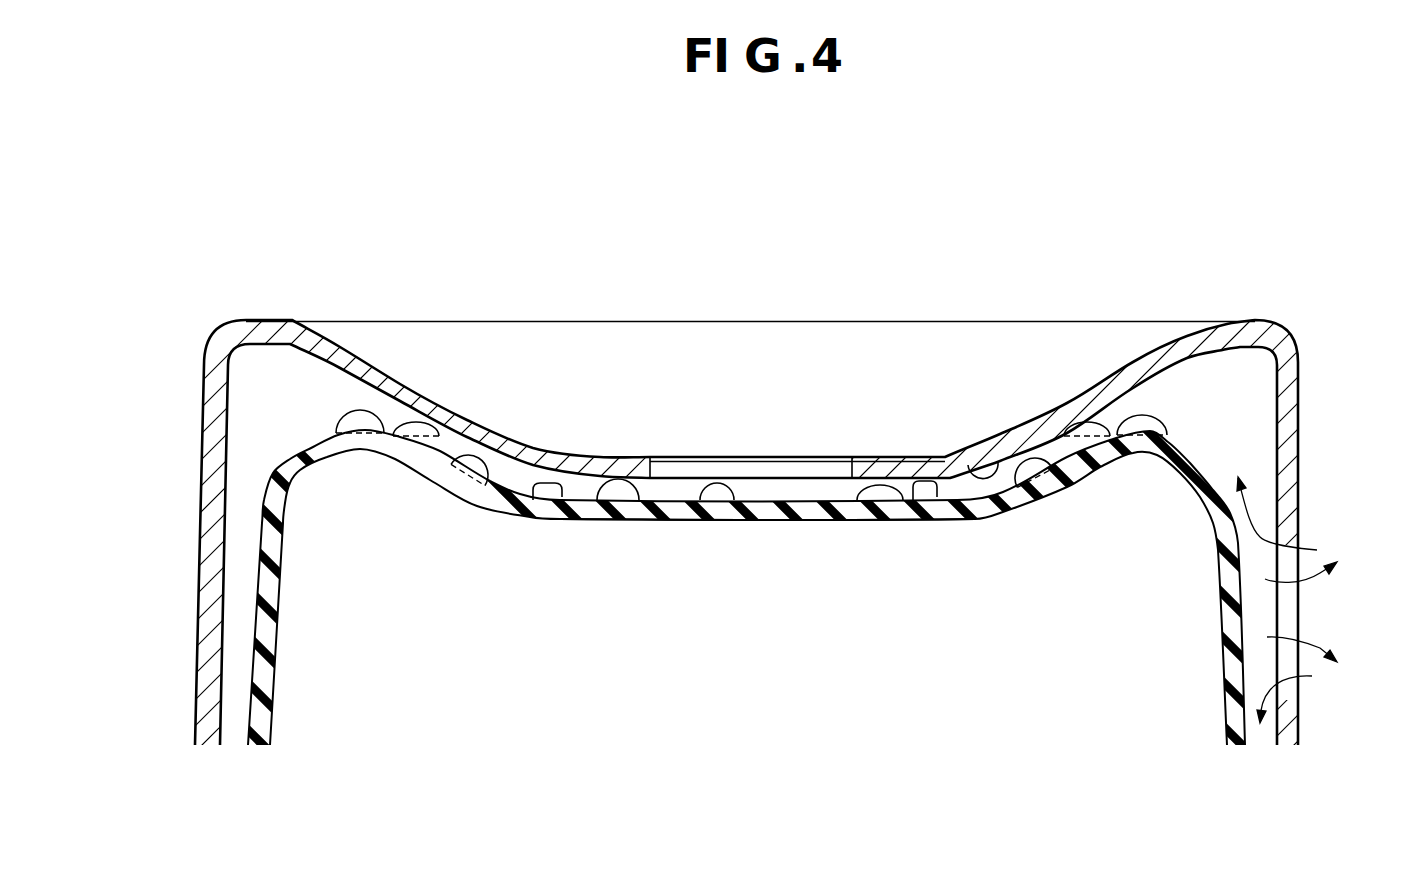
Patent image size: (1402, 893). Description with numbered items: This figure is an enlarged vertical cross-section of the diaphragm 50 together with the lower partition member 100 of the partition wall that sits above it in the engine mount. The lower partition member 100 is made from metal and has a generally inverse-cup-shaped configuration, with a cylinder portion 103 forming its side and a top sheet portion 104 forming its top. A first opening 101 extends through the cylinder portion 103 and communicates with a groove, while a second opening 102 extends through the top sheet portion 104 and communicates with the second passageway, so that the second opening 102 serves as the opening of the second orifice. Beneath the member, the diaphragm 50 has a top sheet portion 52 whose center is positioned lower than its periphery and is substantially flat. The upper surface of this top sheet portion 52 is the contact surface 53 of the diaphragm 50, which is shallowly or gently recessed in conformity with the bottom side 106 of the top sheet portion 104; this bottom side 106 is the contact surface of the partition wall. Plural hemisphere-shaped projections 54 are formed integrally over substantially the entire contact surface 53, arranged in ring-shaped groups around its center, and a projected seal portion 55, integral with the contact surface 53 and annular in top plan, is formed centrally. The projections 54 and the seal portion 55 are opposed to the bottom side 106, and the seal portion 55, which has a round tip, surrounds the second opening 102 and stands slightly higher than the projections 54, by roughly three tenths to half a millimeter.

The diaphragm 50 is at (286, 456).
The top sheet portion 52 is at (828, 513).
The contact surface 53 is at (735, 519).
The hemisphere-shaped projections 54 is at (467, 455).
The projected seal portion 55 is at (533, 501).
The lower partition member 100 is at (1281, 331).
The first opening 101 is at (1296, 543).
The second opening 102 is at (828, 470).
The cylinder portion 103 is at (1300, 422).
The top sheet portion 104 is at (940, 459).
The bottom side 106 is at (997, 465).